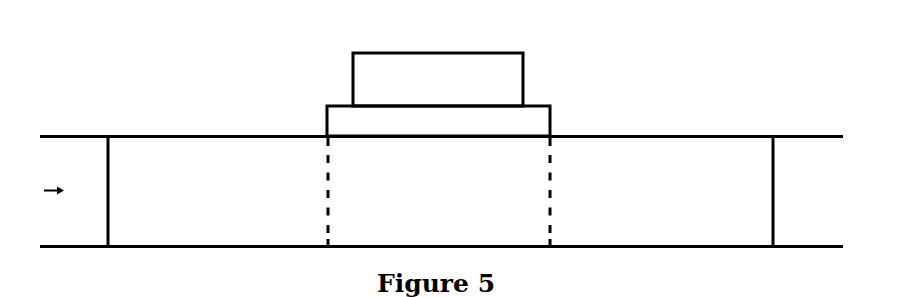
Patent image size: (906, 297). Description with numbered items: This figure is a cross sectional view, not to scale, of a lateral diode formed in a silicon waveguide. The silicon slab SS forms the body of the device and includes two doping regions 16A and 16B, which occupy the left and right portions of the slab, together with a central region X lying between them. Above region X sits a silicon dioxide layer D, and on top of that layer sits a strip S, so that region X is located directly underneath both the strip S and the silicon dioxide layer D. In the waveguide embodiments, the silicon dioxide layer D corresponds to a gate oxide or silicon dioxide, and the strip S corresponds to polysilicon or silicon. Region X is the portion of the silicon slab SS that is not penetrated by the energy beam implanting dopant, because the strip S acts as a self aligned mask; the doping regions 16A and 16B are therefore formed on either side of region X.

The doping region 16A is at (218, 192).
The doping region 16B is at (661, 192).
The region X is at (439, 191).
The silicon dioxide layer D is at (438, 121).
The strip S is at (438, 79).
The silicon slab SS is at (39, 191).